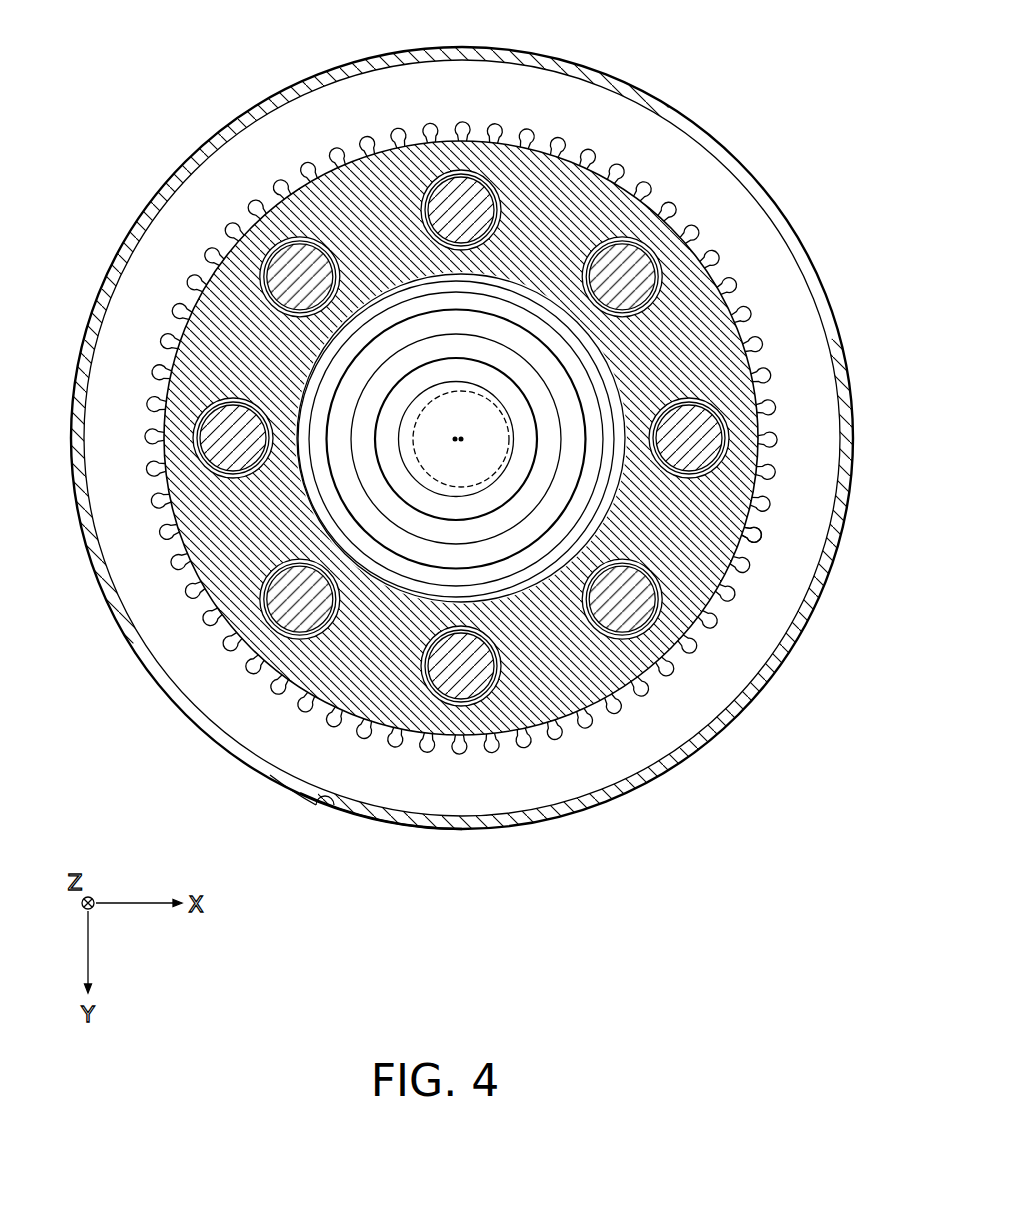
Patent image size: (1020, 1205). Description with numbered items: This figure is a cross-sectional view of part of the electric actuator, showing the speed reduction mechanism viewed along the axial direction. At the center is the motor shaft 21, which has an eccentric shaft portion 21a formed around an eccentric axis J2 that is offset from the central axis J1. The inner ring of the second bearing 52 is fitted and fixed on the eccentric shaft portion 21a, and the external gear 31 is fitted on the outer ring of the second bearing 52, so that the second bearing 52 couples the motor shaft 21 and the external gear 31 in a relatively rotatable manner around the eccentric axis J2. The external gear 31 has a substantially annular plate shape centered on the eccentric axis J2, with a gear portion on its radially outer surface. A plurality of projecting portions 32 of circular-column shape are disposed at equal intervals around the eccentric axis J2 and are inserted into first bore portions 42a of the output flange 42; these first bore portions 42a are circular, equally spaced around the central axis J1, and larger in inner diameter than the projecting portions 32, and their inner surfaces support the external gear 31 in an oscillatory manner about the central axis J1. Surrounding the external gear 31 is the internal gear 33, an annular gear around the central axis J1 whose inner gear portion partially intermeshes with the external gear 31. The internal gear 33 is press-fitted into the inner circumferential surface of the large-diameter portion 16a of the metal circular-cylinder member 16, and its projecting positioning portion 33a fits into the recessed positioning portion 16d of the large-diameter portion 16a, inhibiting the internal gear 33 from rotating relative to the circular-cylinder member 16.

The circular-cylinder member 16 is at (690, 114).
The large-diameter portion 16a is at (612, 783).
The recessed positioning portion 16d is at (313, 792).
The motor shaft 21 is at (408, 490).
The eccentric shaft portion 21a is at (417, 408).
The external gear 31 is at (245, 227).
The projecting portion 32 is at (680, 462).
The internal gear 33 is at (228, 698).
The projecting positioning portion 33a is at (293, 800).
The output flange 42 is at (700, 332).
The first bore portion 42a is at (741, 540).
The second bearing 52 is at (493, 363).
The central axis J1 is at (461, 440).
The eccentric axis J2 is at (456, 440).